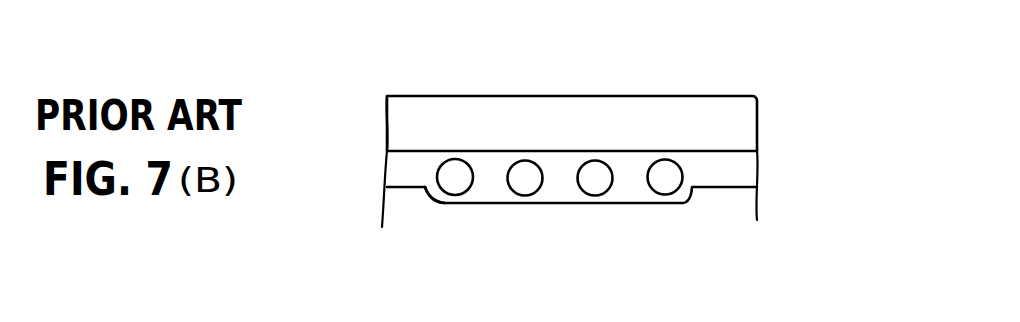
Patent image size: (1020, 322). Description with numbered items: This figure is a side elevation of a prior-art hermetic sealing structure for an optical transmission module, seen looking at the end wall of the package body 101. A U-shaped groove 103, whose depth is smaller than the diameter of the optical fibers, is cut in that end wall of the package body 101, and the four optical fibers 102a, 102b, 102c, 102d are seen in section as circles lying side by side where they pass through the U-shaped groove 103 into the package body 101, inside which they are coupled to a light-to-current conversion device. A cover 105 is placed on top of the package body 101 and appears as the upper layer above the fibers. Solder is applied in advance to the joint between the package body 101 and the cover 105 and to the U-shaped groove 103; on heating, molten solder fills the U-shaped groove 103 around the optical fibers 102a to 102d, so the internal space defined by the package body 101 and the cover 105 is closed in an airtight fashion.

The package body 101 is at (747, 203).
The optical fiber 102a is at (665, 177).
The optical fiber 102b is at (597, 175).
The optical fiber 102c is at (525, 173).
The optical fiber 102d is at (453, 183).
The U-shaped groove 103 is at (430, 197).
The cover 105 is at (405, 123).